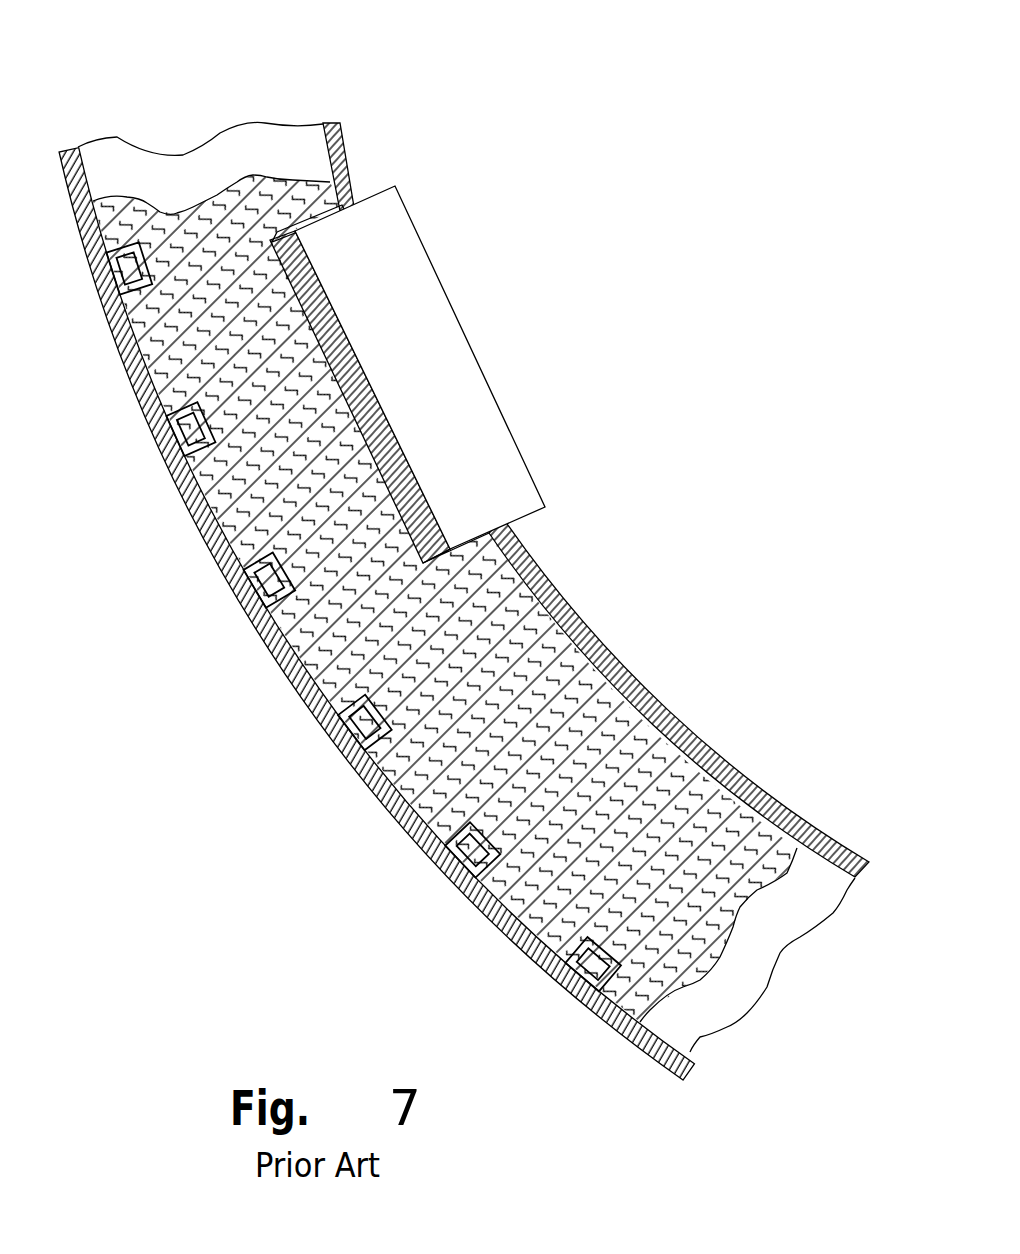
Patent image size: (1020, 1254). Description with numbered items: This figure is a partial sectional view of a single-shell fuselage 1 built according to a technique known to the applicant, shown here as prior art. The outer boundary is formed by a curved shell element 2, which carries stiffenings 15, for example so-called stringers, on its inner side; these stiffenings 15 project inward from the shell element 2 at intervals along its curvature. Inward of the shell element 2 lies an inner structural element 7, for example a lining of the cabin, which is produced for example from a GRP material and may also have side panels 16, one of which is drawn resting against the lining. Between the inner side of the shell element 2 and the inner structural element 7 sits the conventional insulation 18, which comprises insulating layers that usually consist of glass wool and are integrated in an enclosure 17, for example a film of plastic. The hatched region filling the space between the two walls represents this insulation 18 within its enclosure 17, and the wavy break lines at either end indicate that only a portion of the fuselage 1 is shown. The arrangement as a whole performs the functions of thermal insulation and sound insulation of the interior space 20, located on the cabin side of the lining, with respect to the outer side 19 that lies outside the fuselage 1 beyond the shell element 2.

The single-shell fuselage 1 is at (588, 110).
The shell element 2 is at (368, 810).
The inner structural element 7 is at (856, 860).
The stiffenings 15 is at (176, 492).
The side panels 16 is at (360, 388).
The enclosure 17 is at (332, 200).
The insulation 18 is at (610, 645).
The outer side 19 is at (103, 724).
The interior space 20 is at (724, 331).